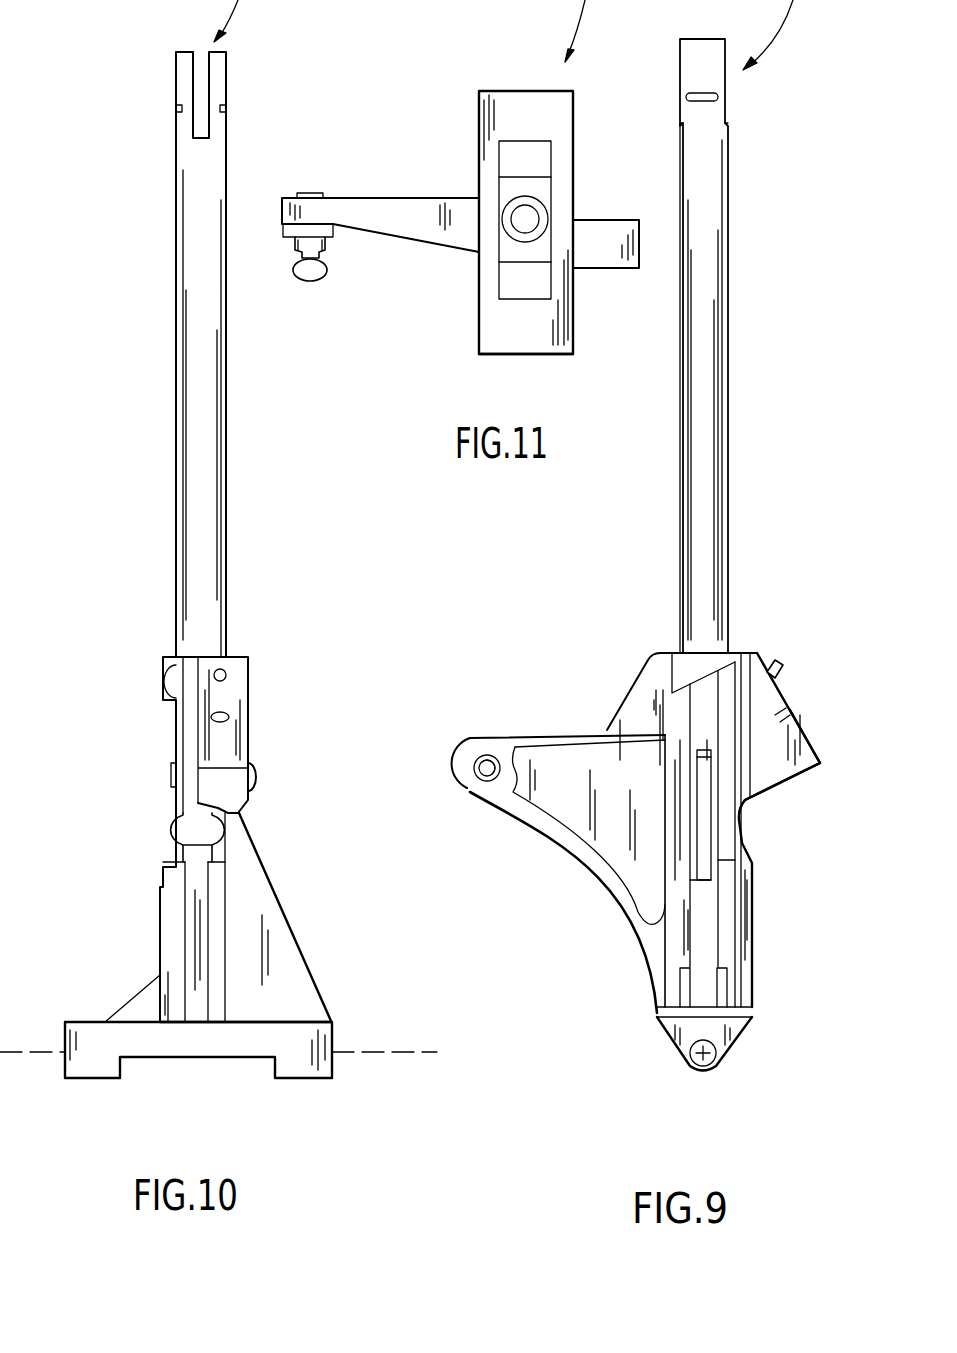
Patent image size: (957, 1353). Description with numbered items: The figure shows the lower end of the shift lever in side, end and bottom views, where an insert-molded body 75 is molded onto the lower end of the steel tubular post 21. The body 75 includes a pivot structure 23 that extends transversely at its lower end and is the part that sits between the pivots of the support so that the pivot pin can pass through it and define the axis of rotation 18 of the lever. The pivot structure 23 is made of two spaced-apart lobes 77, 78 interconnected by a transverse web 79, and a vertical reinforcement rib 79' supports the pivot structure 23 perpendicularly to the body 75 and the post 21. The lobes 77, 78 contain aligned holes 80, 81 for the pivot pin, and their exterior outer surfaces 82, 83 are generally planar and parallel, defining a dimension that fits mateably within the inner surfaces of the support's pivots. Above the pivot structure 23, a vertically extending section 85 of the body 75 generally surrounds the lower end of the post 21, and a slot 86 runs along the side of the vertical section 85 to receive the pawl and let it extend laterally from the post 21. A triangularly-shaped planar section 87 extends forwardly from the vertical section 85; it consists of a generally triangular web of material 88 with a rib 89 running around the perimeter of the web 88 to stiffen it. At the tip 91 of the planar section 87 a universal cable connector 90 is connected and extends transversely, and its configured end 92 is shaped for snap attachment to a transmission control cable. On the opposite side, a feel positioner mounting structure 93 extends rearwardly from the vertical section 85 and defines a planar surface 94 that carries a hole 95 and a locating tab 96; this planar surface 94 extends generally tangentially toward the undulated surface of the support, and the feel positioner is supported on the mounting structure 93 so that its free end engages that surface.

In FIG. 10, the axis of rotation 18 is at (396, 1055).
In FIG. 9, the axis of rotation 18 is at (699, 1061).
In FIG. 10, the post 21 is at (228, 483).
In FIG. 11, the post 21 is at (510, 240).
In FIG. 9, the post 21 is at (727, 396).
In FIG. 11, the pivot structure 23 is at (590, 368).
In FIG. 9, the pivot structure 23 is at (660, 1043).
In FIG. 11, the insert-molded body 75 is at (472, 110).
In FIG. 9, the insert-molded body 75 is at (636, 650).
In FIG. 10, the lobe 77 is at (100, 1080).
In FIG. 11, the lobe 77 is at (476, 336).
In FIG. 9, the lobe 77 is at (703, 1070).
In FIG. 10, the lobe 78 is at (286, 1080).
In FIG. 11, the lobe 78 is at (574, 108).
In FIG. 10, the transverse web 79 is at (198, 1072).
In FIG. 10, the vertical reinforcement rib 79' is at (237, 917).
In FIG. 10, the hole 80 is at (60, 1058).
In FIG. 9, the hole 80 is at (724, 1055).
In FIG. 10, the hole 81 is at (334, 1080).
In FIG. 10, the outer surface 82 is at (62, 1032).
In FIG. 10, the outer surface 83 is at (333, 1033).
In FIG. 9, the vertically extending section 85 is at (741, 824).
In FIG. 9, the slot 86 is at (680, 837).
In FIG. 11, the triangularly-shaped planar section 87 is at (397, 198).
In FIG. 9, the triangularly-shaped planar section 87 is at (551, 853).
In FIG. 9, the web of material 88 is at (594, 794).
In FIG. 9, the rib 89 is at (560, 737).
In FIG. 11, the universal cable connector 90 is at (327, 247).
In FIG. 9, the universal cable connector 90 is at (480, 781).
In FIG. 9, the tip 91 is at (480, 794).
In FIG. 10, the configured end 92 is at (262, 776).
In FIG. 11, the configured end 92 is at (308, 282).
In FIG. 9, the configured end 92 is at (478, 763).
In FIG. 10, the feel positioner mounting structure 93 is at (248, 660).
In FIG. 11, the feel positioner mounting structure 93 is at (600, 270).
In FIG. 9, the feel positioner mounting structure 93 is at (783, 780).
In FIG. 9, the planar surface 94 is at (805, 748).
In FIG. 10, the hole 95 is at (230, 716).
In FIG. 9, the hole 95 is at (790, 717).
In FIG. 10, the locating tab 96 is at (228, 670).
In FIG. 9, the locating tab 96 is at (781, 660).